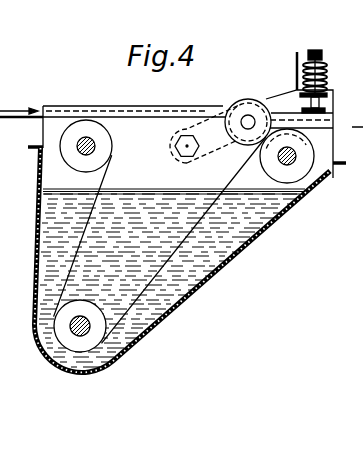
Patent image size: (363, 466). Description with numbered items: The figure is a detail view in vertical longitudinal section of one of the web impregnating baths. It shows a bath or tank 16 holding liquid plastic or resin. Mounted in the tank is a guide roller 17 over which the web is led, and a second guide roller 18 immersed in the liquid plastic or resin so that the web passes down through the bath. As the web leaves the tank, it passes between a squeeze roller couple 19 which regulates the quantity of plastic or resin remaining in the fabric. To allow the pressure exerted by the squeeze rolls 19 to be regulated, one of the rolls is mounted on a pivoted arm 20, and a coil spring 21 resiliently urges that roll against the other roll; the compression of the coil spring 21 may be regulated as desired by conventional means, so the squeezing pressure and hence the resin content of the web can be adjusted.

The bath or tank 16 is at (204, 286).
The guide roller 17 is at (85, 128).
The second guide roller 18 is at (80, 347).
The squeeze roller couple 19 is at (294, 176).
The pivoted arm 20 is at (205, 113).
The coil spring 21 is at (328, 72).